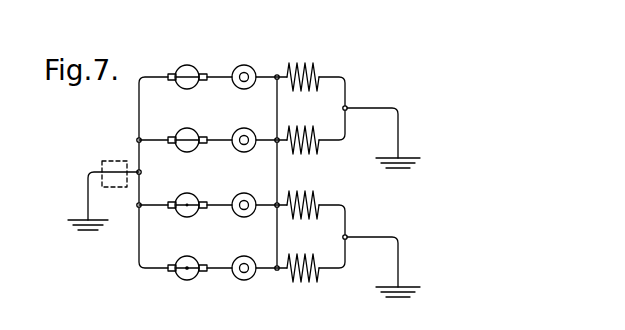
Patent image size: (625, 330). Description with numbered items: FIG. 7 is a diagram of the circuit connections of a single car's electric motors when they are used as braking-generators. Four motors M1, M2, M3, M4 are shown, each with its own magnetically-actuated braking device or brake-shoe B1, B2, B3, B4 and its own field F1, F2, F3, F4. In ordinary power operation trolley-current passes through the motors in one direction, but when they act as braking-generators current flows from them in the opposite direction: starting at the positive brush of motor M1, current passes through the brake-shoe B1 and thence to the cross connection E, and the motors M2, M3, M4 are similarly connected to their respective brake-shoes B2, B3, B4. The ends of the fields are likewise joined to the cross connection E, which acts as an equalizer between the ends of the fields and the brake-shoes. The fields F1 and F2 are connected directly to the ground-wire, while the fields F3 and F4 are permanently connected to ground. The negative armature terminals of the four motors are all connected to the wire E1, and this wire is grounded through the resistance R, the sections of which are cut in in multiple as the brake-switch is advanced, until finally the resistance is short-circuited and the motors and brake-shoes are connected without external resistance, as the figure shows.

The motor M1 is at (187, 61).
The motor M2 is at (187, 126).
The motor M3 is at (187, 192).
The motor M4 is at (187, 255).
The brake-shoe B1 is at (244, 61).
The brake-shoe B2 is at (245, 126).
The brake-shoe B3 is at (245, 192).
The brake-shoe B4 is at (245, 255).
The field F1 is at (303, 62).
The field F2 is at (303, 127).
The field F3 is at (303, 191).
The field F4 is at (303, 255).
The wire E1 is at (137, 110).
The cross connection E is at (276, 166).
The resistance R is at (103, 182).